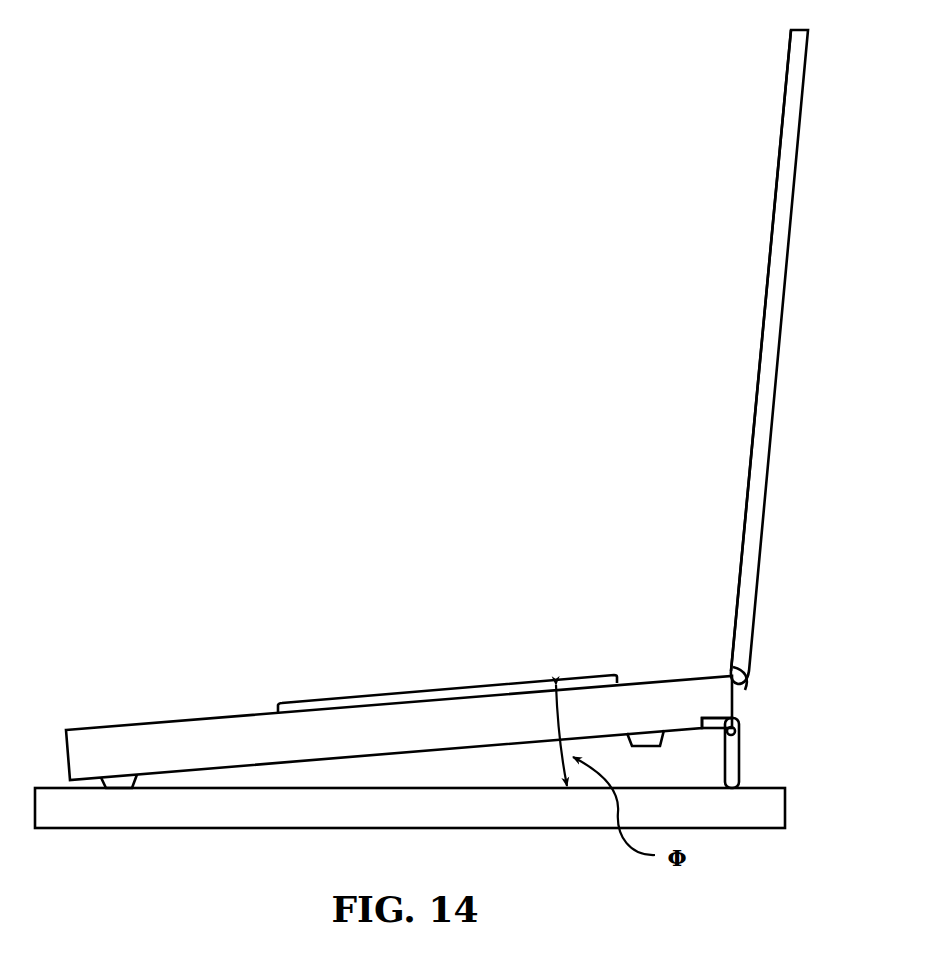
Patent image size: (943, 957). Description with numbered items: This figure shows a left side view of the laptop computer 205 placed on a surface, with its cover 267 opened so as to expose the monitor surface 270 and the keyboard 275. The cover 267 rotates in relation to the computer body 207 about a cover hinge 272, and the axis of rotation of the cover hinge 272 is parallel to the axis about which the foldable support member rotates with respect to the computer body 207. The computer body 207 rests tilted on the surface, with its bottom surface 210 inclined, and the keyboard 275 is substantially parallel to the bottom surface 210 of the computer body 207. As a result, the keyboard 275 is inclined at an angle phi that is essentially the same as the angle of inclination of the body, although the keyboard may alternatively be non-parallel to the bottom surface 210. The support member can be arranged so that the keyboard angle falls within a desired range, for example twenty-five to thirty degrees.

The laptop computer 205 is at (274, 519).
The computer body 207 is at (450, 730).
The bottom surface 210 is at (342, 762).
The cover 267 is at (757, 421).
The monitor surface 270 is at (768, 252).
The cover hinge 272 is at (745, 686).
The keyboard 275 is at (520, 684).